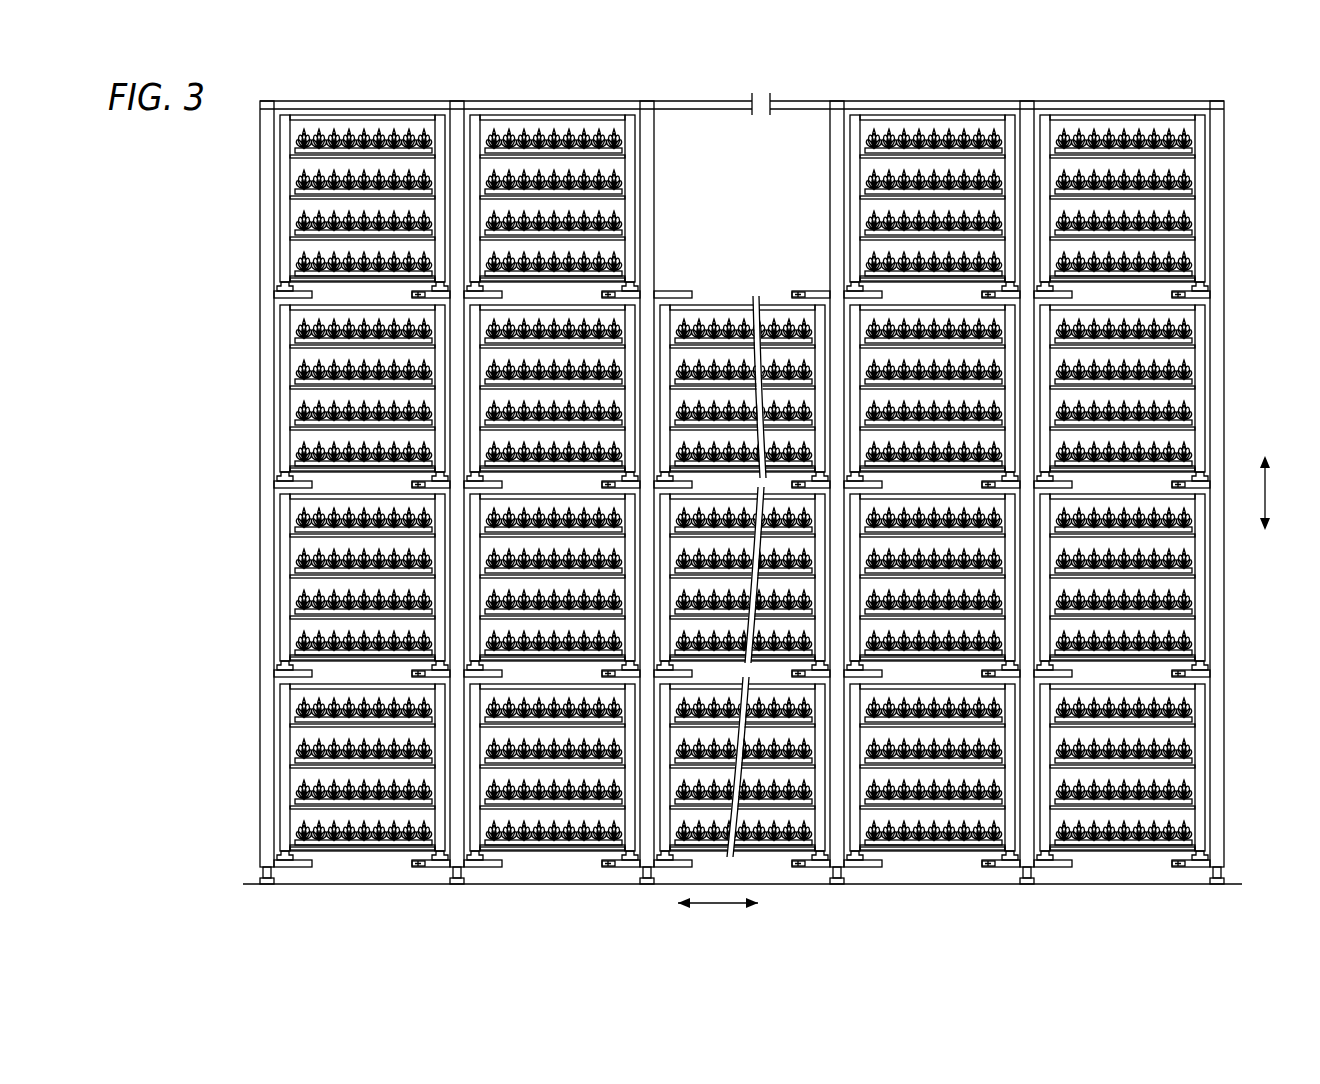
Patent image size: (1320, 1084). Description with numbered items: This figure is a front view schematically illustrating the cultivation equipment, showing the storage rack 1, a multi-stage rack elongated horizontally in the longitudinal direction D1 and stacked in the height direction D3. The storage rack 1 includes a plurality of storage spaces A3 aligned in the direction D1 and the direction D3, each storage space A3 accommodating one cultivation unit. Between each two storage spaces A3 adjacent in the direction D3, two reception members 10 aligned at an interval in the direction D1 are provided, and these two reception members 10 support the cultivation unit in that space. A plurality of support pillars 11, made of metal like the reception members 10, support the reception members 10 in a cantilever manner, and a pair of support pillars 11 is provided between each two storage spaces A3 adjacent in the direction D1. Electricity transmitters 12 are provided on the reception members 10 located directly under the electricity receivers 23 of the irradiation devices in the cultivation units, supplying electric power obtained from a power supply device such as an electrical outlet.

The storage rack 1 is at (1220, 113).
The reception member 10 is at (278, 295).
The support pillar 11 is at (262, 256).
The electricity transmitter 12 is at (1212, 300).
The electricity receiver 23 is at (1203, 286).
The storage space A3 is at (300, 173).
The direction D1 is at (718, 916).
The direction D3 is at (1279, 493).